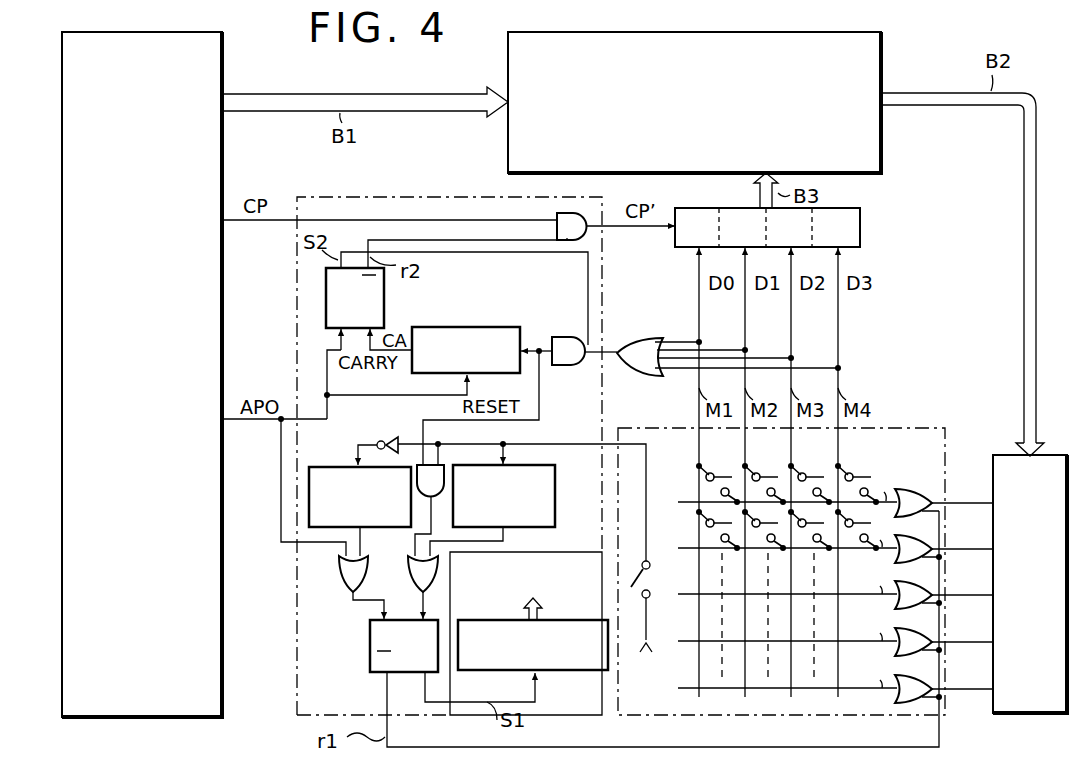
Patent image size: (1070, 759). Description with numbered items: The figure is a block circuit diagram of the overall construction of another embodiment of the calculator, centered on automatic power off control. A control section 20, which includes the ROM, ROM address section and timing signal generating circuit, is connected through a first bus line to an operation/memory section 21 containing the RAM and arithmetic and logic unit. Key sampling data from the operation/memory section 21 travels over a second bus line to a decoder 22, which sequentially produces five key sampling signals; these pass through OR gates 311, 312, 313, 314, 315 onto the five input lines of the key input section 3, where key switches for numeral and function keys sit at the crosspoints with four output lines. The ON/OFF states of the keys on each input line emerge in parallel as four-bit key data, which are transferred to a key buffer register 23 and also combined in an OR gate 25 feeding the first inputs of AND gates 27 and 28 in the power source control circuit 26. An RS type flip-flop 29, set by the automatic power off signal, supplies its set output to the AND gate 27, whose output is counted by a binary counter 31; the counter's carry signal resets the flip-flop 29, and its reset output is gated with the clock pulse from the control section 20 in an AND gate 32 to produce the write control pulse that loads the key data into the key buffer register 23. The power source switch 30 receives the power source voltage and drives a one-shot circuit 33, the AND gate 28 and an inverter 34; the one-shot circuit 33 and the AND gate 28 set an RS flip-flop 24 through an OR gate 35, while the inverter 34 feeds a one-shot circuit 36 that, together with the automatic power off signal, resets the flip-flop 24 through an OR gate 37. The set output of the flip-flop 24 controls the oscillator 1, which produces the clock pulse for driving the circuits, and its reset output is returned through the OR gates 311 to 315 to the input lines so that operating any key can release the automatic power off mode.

The oscillator 1 is at (584, 668).
The key input section 3 is at (805, 542).
The control section 20 is at (223, 47).
The operation/memory section 21 is at (872, 40).
The decoder 22 is at (1004, 460).
The key buffer register 23 is at (864, 224).
The RS flip-flop 24 is at (370, 648).
The OR gate 25 is at (646, 339).
The power source control circuit 26 is at (427, 196).
The AND gate 27 is at (555, 338).
The AND gate 28 is at (439, 456).
The RS type flip-flop 29 is at (386, 298).
The power source switch 30 is at (650, 597).
The binary counter 31 is at (473, 325).
The AND gate 32 is at (567, 248).
The one-shot circuit 33 is at (556, 485).
The inverter 34 is at (392, 438).
The OR gate 35 is at (412, 572).
The one-shot circuit 36 is at (318, 467).
The OR gate 37 is at (343, 572).
The OR gate 311 is at (917, 488).
The OR gate 312 is at (898, 556).
The OR gate 313 is at (898, 603).
The OR gate 314 is at (898, 649).
The OR gate 315 is at (898, 696).